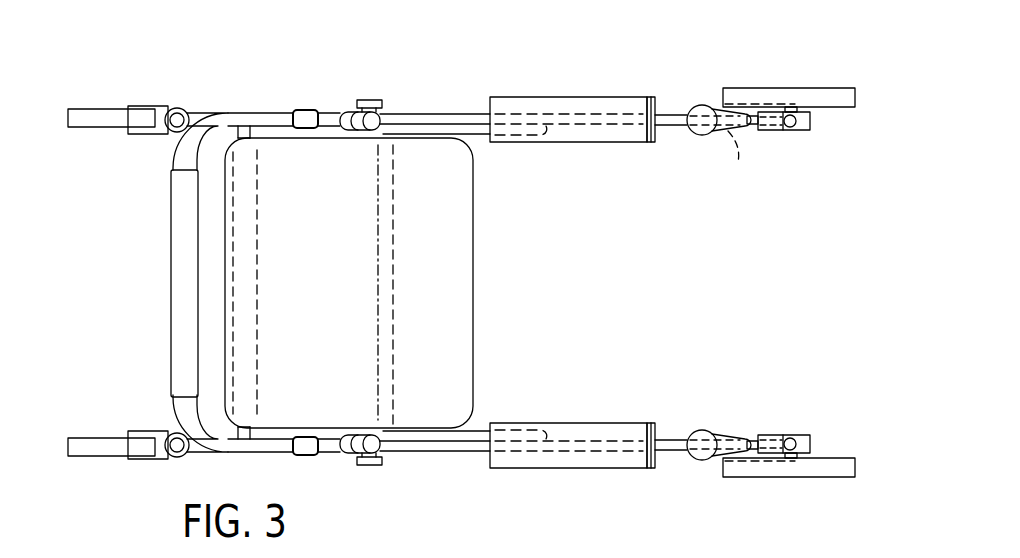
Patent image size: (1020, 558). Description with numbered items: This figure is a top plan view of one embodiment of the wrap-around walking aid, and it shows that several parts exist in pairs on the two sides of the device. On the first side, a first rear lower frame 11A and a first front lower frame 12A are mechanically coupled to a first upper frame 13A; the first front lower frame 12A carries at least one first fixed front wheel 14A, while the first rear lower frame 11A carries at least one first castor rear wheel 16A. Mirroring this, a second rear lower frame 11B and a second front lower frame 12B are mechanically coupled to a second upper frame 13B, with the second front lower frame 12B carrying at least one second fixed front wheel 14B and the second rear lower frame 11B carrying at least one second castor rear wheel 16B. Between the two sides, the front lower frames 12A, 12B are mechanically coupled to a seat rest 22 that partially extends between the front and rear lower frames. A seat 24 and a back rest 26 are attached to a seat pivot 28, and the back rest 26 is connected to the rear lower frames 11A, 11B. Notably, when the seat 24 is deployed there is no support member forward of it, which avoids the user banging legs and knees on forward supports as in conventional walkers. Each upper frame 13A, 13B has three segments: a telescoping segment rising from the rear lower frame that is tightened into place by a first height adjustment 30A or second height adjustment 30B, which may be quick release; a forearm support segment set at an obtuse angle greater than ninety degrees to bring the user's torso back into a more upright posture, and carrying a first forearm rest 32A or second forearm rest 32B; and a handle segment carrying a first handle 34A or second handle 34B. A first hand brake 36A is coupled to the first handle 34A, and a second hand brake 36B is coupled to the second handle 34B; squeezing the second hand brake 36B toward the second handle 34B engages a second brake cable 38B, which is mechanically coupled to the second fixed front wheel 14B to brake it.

The first rear lower frame 11A is at (193, 452).
The second rear lower frame 11B is at (193, 112).
The first front lower frame 12A is at (671, 455).
The second front lower frame 12B is at (669, 110).
The first upper frame 13A is at (470, 468).
The second upper frame 13B is at (424, 98).
The first fixed front wheel 14A is at (797, 478).
The second fixed front wheel 14B is at (796, 88).
The first castor rear wheel 16A is at (112, 455).
The second castor rear wheel 16B is at (112, 109).
The seat rest 22 is at (393, 392).
The seat 24 is at (350, 291).
The back rest 26 is at (170, 282).
The seat pivot 28 is at (252, 133).
The first height adjustment 30A is at (377, 465).
The second height adjustment 30B is at (358, 100).
The first forearm rest 32A is at (581, 422).
The second forearm rest 32B is at (582, 143).
The first handle 34A is at (702, 462).
The second handle 34B is at (702, 104).
The first hand brake 36A is at (768, 437).
The second hand brake 36B is at (765, 131).
The second brake cable 38B is at (739, 162).